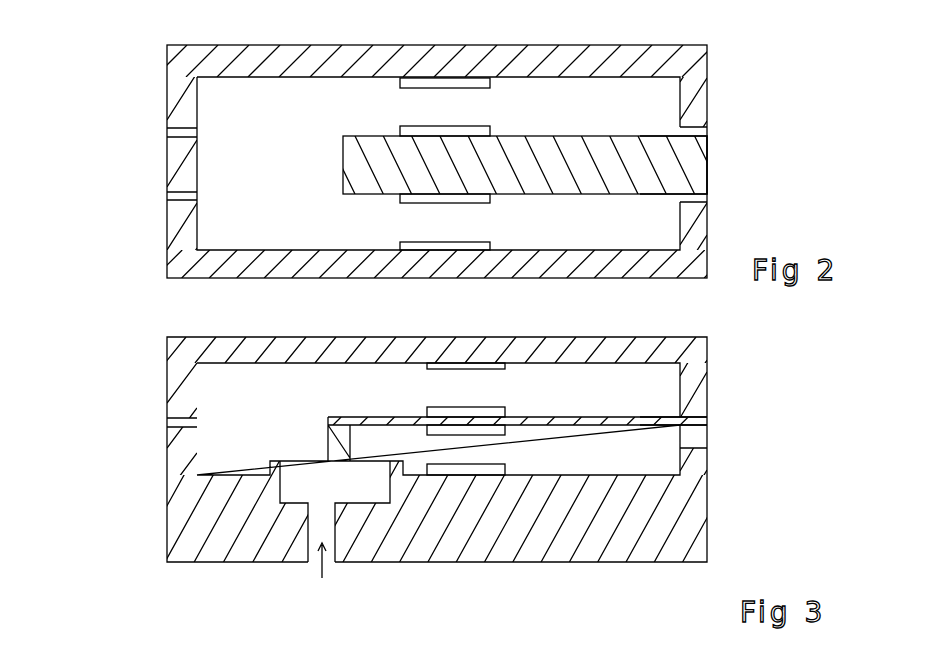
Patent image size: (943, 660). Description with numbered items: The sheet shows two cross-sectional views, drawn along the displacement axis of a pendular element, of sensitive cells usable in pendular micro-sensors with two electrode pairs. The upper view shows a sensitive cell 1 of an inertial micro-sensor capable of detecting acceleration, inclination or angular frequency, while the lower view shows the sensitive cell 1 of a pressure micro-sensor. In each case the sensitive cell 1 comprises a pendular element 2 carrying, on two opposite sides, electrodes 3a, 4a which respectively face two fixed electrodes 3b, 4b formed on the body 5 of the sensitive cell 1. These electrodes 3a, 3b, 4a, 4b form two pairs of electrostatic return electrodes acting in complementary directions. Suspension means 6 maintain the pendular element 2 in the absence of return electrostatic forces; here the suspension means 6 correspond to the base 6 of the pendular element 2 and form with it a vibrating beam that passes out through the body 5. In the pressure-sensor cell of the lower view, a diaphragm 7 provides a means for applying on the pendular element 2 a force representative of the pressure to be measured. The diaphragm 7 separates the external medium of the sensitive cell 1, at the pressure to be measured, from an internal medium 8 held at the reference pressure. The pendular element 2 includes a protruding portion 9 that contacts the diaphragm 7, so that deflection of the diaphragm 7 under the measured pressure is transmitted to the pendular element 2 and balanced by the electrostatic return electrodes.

In FIG. 2, the sensitive cell 1 is at (146, 120).
In FIG. 3, the sensitive cell 1 is at (151, 459).
In FIG. 2, the pendular element 2 is at (533, 120).
In FIG. 3, the pendular element 2 is at (599, 399).
In FIG. 2, the electrode 3a is at (425, 125).
In FIG. 3, the electrode 3a is at (427, 410).
In FIG. 2, the fixed electrode 3b is at (408, 86).
In FIG. 3, the fixed electrode 3b is at (428, 369).
In FIG. 2, the electrode 4a is at (405, 202).
In FIG. 3, the electrode 4a is at (483, 435).
In FIG. 2, the fixed electrode 4b is at (420, 243).
In FIG. 3, the fixed electrode 4b is at (507, 465).
In FIG. 2, the body 5 is at (683, 262).
In FIG. 3, the body 5 is at (690, 556).
In FIG. 2, the suspension means 6 is at (638, 162).
In FIG. 3, the suspension means 6 is at (657, 420).
In FIG. 3, the diaphragm 7 is at (308, 463).
In FIG. 3, the internal medium 8 is at (225, 455).
In FIG. 3, the protruding portion 9 is at (336, 443).